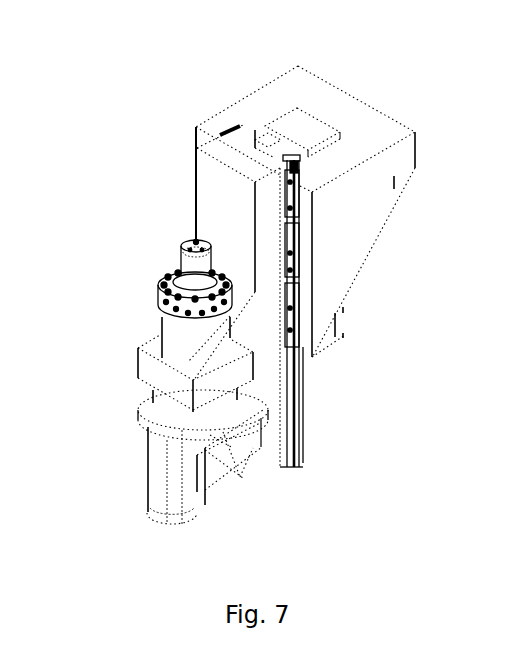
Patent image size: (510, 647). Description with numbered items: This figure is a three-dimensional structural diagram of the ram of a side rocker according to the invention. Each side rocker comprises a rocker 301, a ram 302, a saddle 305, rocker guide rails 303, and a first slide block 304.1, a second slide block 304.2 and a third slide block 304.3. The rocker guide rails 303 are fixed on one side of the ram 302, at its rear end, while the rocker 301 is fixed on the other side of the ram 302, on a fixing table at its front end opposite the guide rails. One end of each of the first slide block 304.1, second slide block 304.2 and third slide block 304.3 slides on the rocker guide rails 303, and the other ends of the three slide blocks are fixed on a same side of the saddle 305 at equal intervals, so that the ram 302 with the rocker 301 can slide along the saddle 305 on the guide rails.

The rocker 301 is at (175, 334).
The ram 302 is at (226, 185).
The rocker guide rail 303 is at (303, 400).
The first slide block 304.1 is at (297, 200).
The second slide block 304.2 is at (297, 277).
The third slide block 304.3 is at (297, 332).
The saddle 305 is at (358, 123).